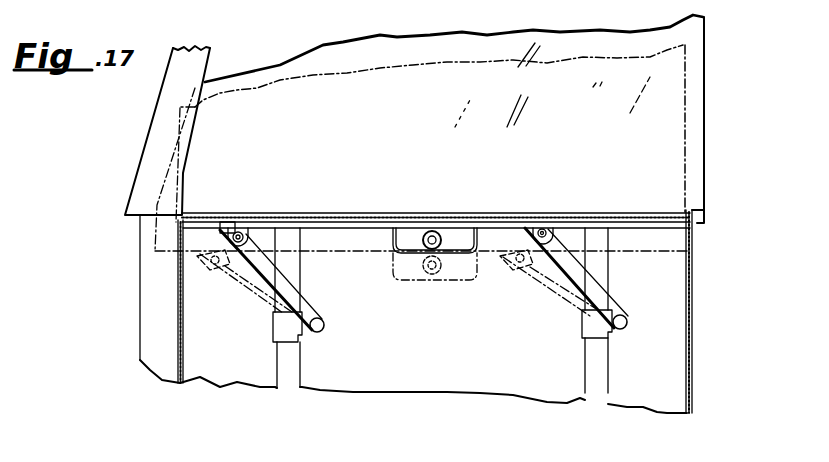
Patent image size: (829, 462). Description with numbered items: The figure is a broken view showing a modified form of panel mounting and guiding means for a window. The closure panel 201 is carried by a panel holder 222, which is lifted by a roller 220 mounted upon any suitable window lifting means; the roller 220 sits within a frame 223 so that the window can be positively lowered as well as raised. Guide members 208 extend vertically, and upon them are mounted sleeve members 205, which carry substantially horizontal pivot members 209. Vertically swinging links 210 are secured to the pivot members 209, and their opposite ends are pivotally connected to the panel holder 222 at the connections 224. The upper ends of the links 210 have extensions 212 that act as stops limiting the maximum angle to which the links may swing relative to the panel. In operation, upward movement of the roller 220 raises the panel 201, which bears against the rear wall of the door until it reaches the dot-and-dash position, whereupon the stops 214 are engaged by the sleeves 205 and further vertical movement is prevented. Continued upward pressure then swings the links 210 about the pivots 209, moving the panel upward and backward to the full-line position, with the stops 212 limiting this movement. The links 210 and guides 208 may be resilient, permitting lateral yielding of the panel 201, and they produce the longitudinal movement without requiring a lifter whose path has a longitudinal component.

The closure panel 201 is at (357, 47).
The sleeve member 205 is at (274, 329).
The guide member 208 is at (297, 360).
The pivot member 209 is at (325, 322).
The link 210 is at (302, 295).
The extension 212 is at (222, 233).
The stop 214 is at (278, 296).
The roller 220 is at (424, 243).
The panel holder 222 is at (702, 224).
The frame 223 is at (392, 237).
The pivotal connection 224 is at (243, 232).